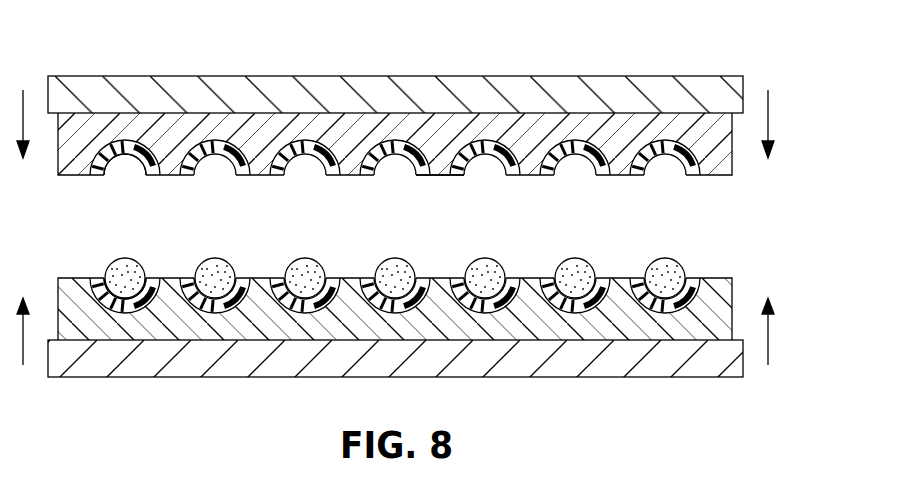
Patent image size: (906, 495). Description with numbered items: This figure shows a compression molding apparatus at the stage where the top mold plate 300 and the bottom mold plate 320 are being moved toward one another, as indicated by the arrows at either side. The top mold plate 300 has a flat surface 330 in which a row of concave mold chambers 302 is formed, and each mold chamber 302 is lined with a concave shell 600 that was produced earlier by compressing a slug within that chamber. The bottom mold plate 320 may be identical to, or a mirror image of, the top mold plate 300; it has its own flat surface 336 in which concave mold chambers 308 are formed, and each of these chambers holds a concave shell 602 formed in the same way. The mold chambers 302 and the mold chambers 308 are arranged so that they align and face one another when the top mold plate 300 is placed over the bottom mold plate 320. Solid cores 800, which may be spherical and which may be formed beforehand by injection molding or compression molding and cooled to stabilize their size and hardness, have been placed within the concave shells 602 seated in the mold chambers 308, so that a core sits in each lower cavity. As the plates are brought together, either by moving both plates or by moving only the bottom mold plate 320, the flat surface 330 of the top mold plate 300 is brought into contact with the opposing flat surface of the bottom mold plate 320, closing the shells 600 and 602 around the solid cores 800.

The top mold plate 300 is at (426, 108).
The mold chambers 302 is at (143, 143).
The flat surface 330 is at (438, 175).
The concave shells 600 is at (115, 143).
The bottom mold plate 320 is at (426, 317).
The flat surface 336 is at (347, 277).
The mold chambers 308 is at (128, 303).
The concave shells 602 is at (137, 303).
The solid cores 800 is at (123, 258).